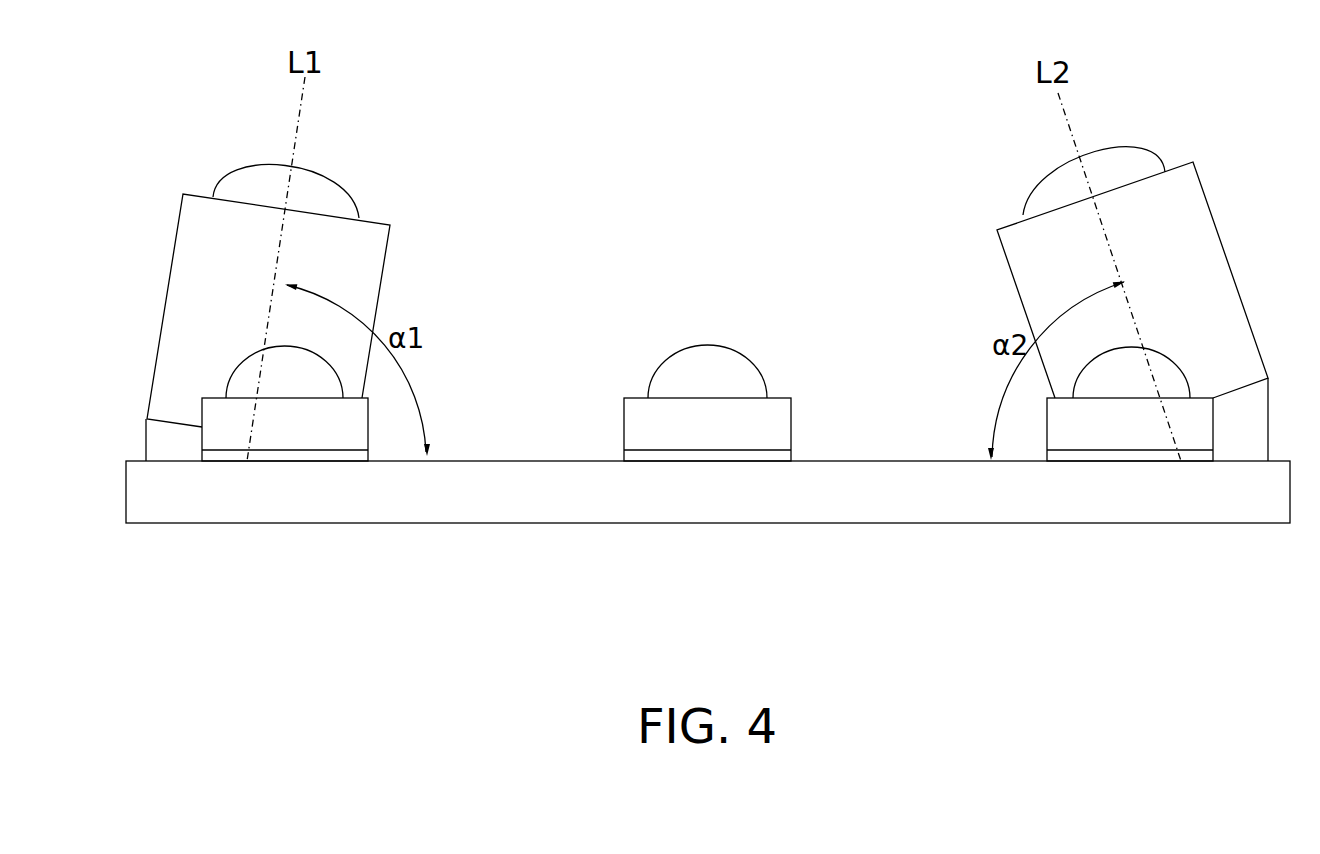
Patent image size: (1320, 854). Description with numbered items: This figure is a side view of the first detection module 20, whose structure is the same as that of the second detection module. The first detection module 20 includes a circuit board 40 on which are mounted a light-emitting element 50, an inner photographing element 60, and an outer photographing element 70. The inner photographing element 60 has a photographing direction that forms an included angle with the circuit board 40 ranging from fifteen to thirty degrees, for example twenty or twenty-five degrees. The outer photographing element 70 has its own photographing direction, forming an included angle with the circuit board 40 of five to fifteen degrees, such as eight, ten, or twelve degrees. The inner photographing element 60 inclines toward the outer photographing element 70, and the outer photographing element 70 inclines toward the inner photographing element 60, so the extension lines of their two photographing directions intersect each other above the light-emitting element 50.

The first detection module 20 is at (547, 233).
The circuit board 40 is at (703, 497).
The light-emitting element 50 is at (707, 363).
The inner photographing element 60 is at (1203, 282).
The outer photographing element 70 is at (180, 305).